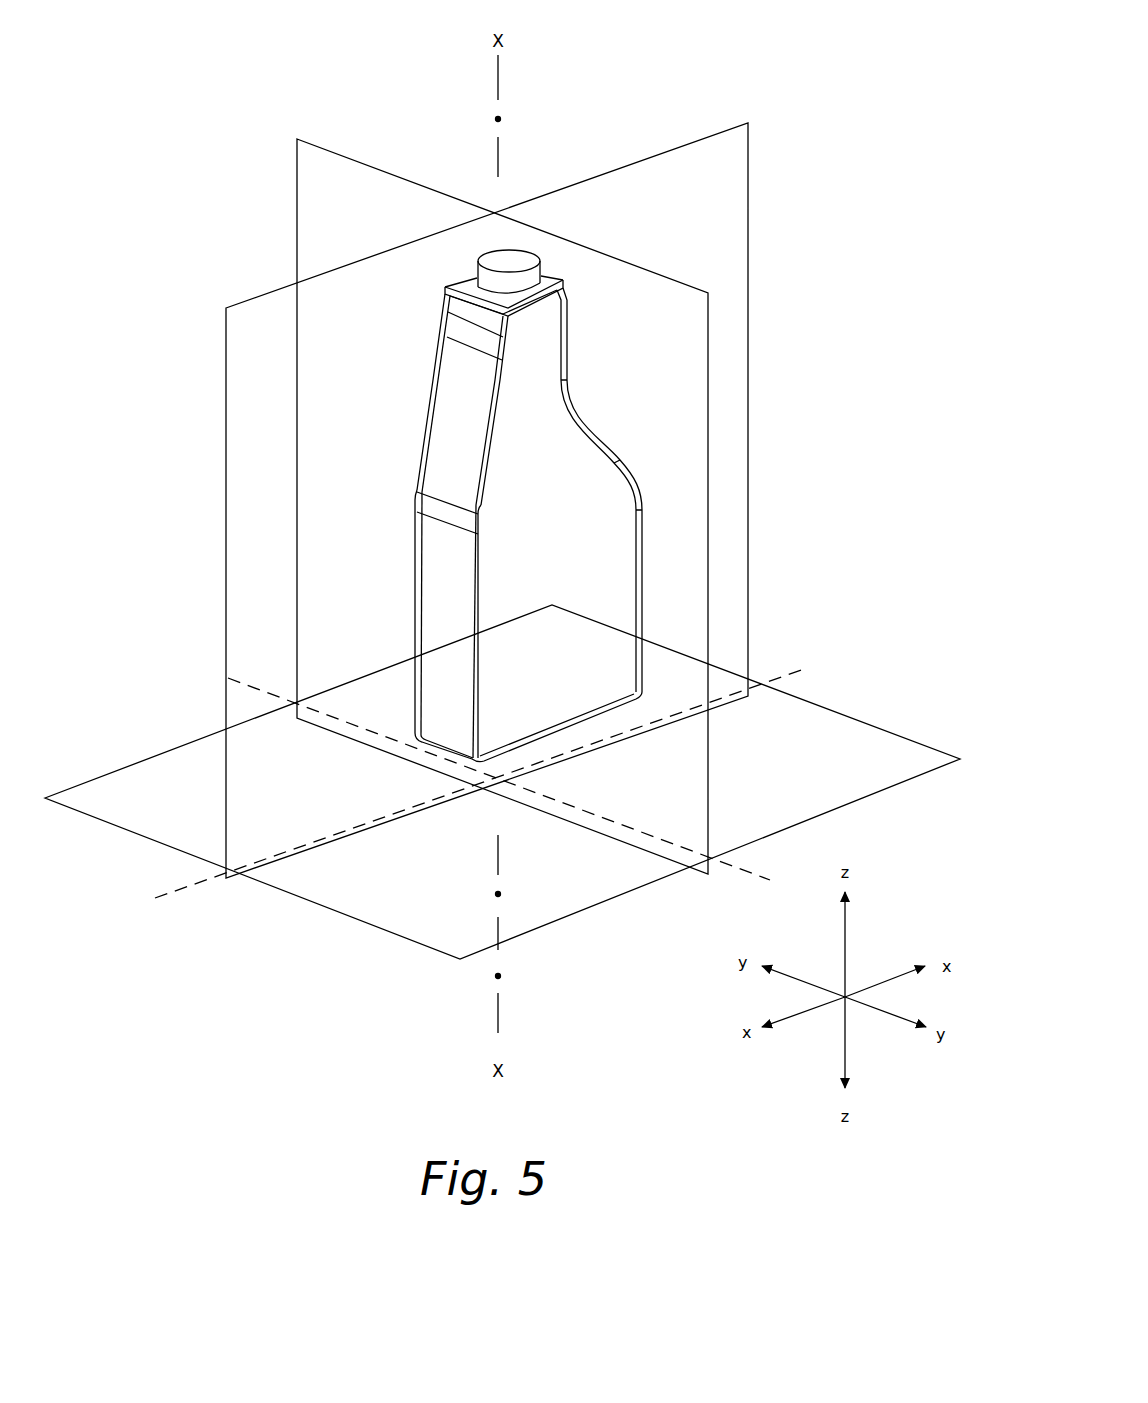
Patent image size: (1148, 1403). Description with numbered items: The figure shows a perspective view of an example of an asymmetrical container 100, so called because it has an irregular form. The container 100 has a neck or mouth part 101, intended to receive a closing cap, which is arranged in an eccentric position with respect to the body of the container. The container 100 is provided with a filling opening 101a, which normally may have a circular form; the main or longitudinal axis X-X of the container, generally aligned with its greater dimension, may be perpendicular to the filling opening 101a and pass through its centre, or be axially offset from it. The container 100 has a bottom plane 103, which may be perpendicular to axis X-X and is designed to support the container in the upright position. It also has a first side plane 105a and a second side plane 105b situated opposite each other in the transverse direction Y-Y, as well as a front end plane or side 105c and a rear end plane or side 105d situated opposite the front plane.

The container 100 is at (772, 309).
The neck or mouth part 101 is at (548, 281).
The filling opening 101a is at (498, 260).
The bottom plane 103 is at (567, 728).
The first side plane 105a is at (620, 619).
The second side plane 105b is at (423, 420).
The front end plane 105c is at (635, 471).
The rear end plane 105d is at (448, 604).